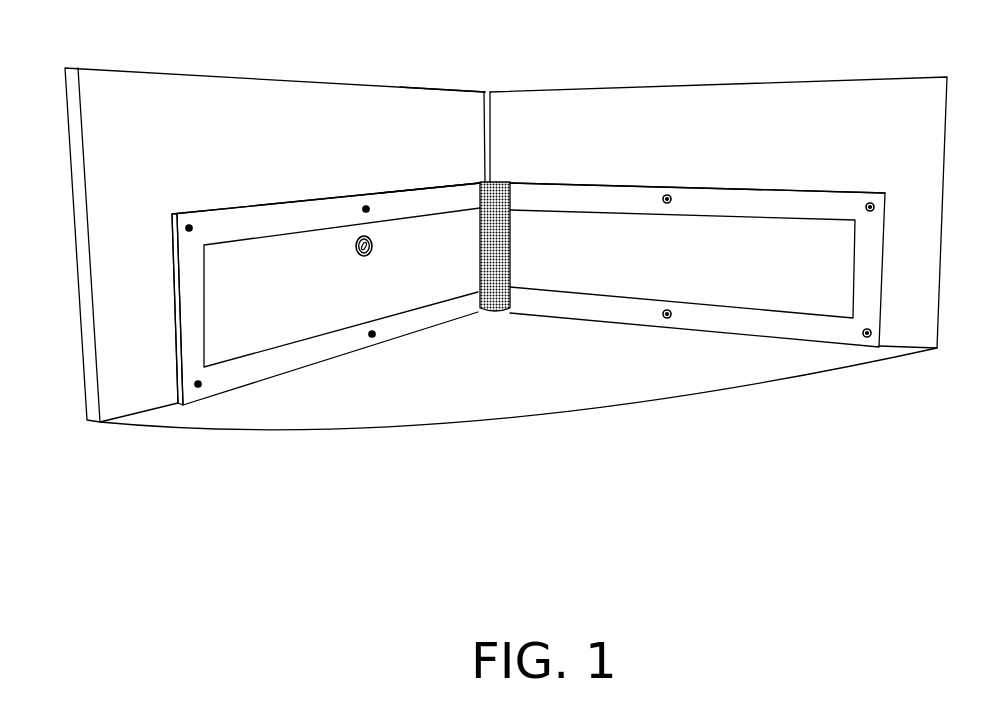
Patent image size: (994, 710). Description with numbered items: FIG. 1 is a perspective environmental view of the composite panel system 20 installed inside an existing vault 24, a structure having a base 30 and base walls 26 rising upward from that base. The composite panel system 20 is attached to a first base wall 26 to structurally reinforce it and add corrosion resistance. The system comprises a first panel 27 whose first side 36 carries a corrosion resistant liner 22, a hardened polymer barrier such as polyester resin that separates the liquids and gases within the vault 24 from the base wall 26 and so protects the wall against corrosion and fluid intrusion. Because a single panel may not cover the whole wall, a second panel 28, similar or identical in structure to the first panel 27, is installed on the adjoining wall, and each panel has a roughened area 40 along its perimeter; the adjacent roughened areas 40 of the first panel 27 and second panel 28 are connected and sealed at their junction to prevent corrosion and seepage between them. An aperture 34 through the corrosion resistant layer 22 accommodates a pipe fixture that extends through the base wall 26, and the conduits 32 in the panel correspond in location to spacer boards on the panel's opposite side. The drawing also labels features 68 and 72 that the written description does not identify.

The composite panel system 20 is at (318, 133).
The corrosion resistant liner 22 is at (480, 92).
The vault 24 is at (827, 92).
The base wall 26 is at (440, 92).
The first panel 27 is at (413, 203).
The second panel 28 is at (690, 193).
The base 30 is at (862, 360).
The conduit 32 is at (372, 334).
The aperture 34 is at (373, 243).
The first side 36 is at (207, 223).
The roughened area 40 is at (267, 220).
The side edge of first frame 68 is at (188, 254).
The corner insert 72 is at (502, 183).